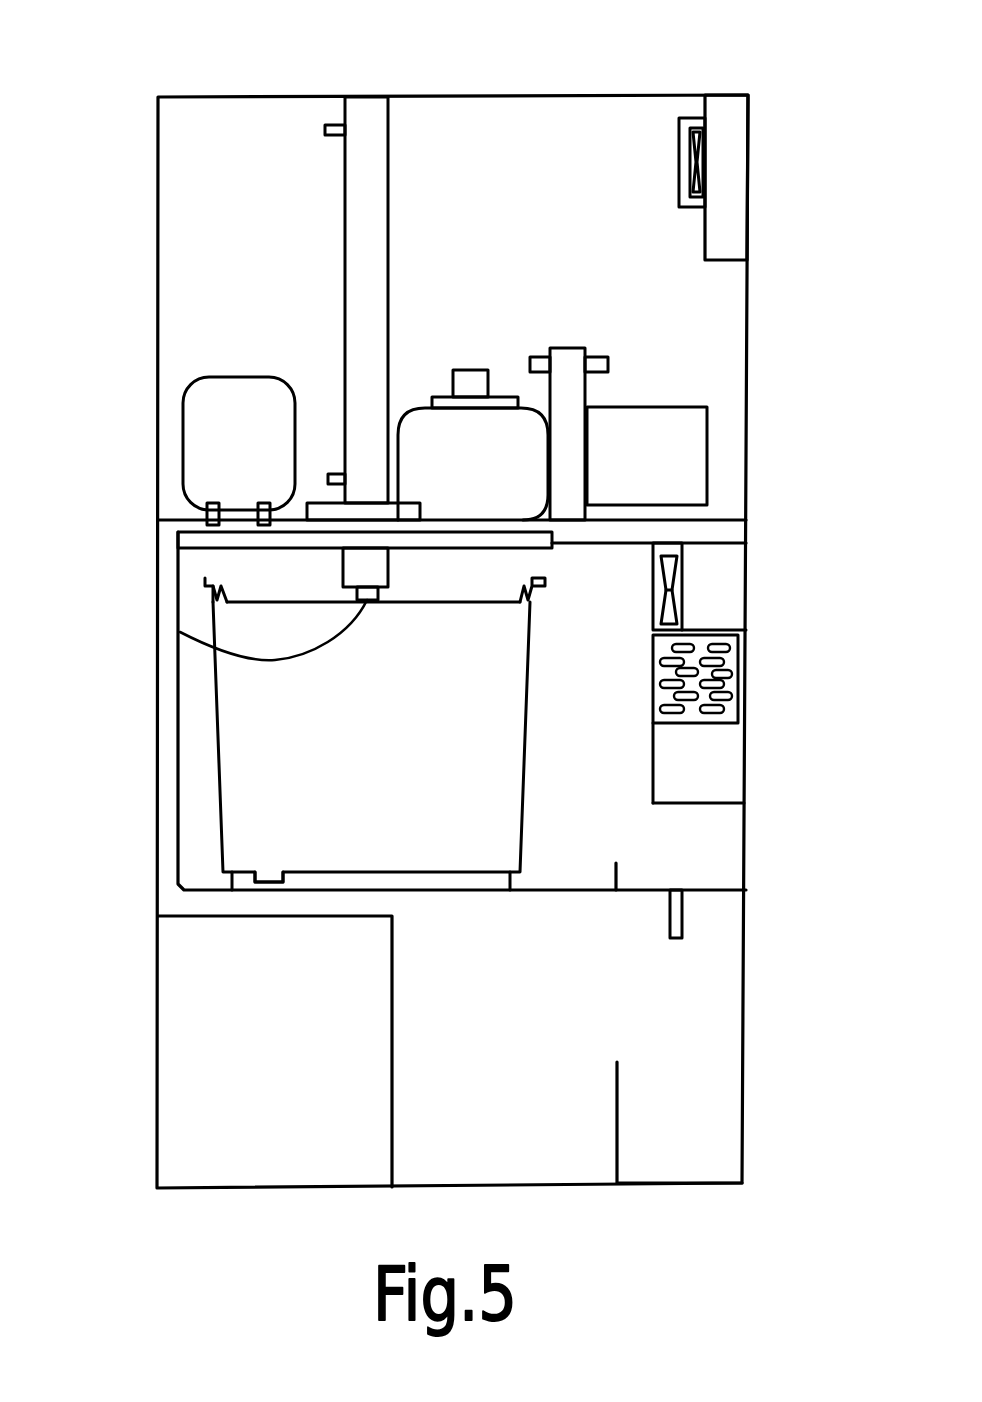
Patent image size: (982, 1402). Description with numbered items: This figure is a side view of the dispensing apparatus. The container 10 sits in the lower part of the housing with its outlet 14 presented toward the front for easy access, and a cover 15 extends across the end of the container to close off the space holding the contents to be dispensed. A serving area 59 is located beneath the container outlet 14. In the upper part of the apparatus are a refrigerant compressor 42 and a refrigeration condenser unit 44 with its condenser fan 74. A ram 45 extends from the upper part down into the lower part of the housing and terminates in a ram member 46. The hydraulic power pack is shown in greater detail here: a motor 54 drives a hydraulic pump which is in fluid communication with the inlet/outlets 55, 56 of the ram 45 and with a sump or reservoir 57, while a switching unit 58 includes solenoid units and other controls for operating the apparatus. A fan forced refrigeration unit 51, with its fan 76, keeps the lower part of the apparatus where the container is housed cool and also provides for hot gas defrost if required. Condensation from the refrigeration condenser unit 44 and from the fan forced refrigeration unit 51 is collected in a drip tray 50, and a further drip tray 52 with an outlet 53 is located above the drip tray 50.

The container 10 is at (250, 742).
The outlet 14 is at (273, 878).
The cover 15 is at (176, 551).
The refrigerant compressor 42 is at (206, 441).
The refrigeration condenser unit 44 is at (733, 208).
The ram 45 is at (355, 205).
The ram member 46 is at (180, 632).
The drip tray 50 is at (703, 1130).
The fan forced refrigeration unit 51 is at (740, 658).
The further drip tray 52 is at (705, 868).
The outlet 53 is at (682, 922).
The motor 54 is at (507, 497).
The inlet/outlet 55 is at (336, 125).
The inlet/outlet 56 is at (332, 474).
The sump or reservoir 57 is at (688, 466).
The switching unit 58 is at (573, 406).
The serving area 59 is at (205, 1058).
The condenser fan 74 is at (683, 187).
The fan 76 is at (657, 620).